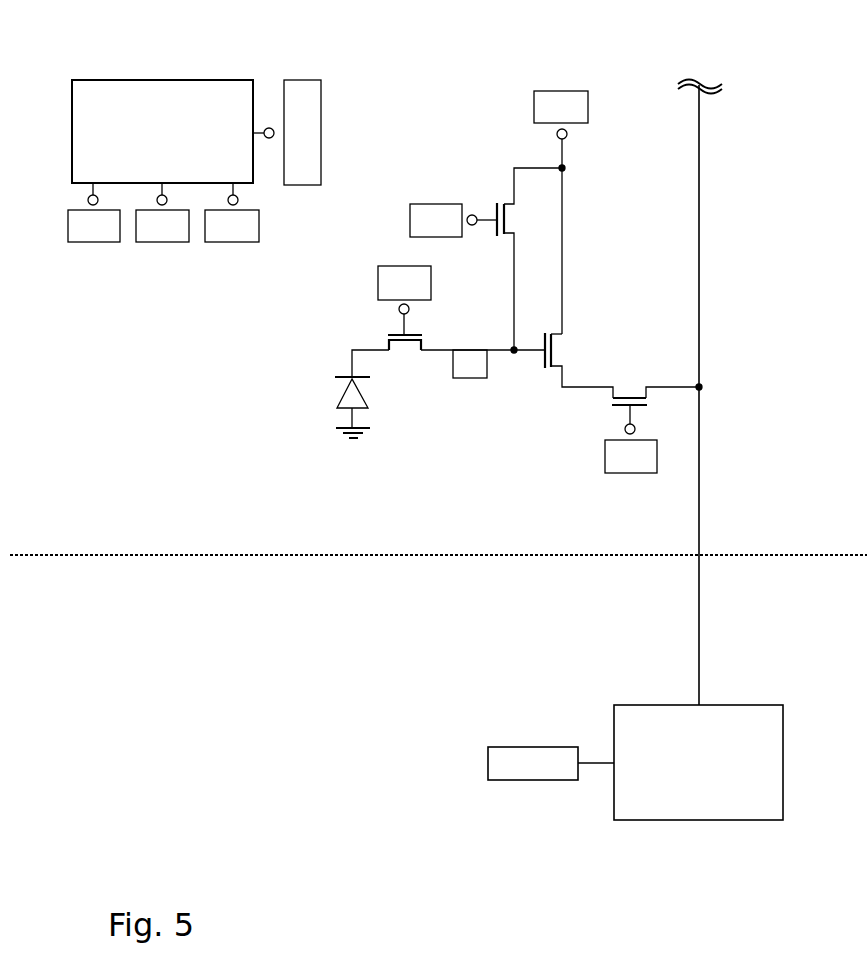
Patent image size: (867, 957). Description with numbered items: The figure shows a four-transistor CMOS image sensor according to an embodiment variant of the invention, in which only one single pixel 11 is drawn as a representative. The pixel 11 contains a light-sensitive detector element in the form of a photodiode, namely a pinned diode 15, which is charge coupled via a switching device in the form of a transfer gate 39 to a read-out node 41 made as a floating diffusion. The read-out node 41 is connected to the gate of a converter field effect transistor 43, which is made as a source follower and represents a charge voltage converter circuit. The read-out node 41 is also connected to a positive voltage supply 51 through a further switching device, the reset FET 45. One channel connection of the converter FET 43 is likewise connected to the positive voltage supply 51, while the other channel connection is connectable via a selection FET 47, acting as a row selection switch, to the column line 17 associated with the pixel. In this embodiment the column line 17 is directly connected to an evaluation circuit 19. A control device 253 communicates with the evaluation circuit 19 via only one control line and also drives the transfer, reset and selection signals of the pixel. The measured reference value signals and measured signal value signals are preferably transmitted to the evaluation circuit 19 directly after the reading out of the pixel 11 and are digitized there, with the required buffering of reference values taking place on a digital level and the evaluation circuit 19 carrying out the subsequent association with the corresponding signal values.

The control device 253 is at (166, 79).
The pixel 11 is at (226, 344).
The pinned diode 15 is at (336, 393).
The column line 17 is at (705, 217).
The evaluation circuit 19 is at (635, 762).
The transfer gate 39 is at (406, 346).
The read-out node 41 is at (472, 346).
The converter field effect transistor 43 is at (563, 349).
The reset FET 45 is at (489, 197).
The selection FET 47 is at (633, 385).
The positive voltage supply 51 is at (561, 87).